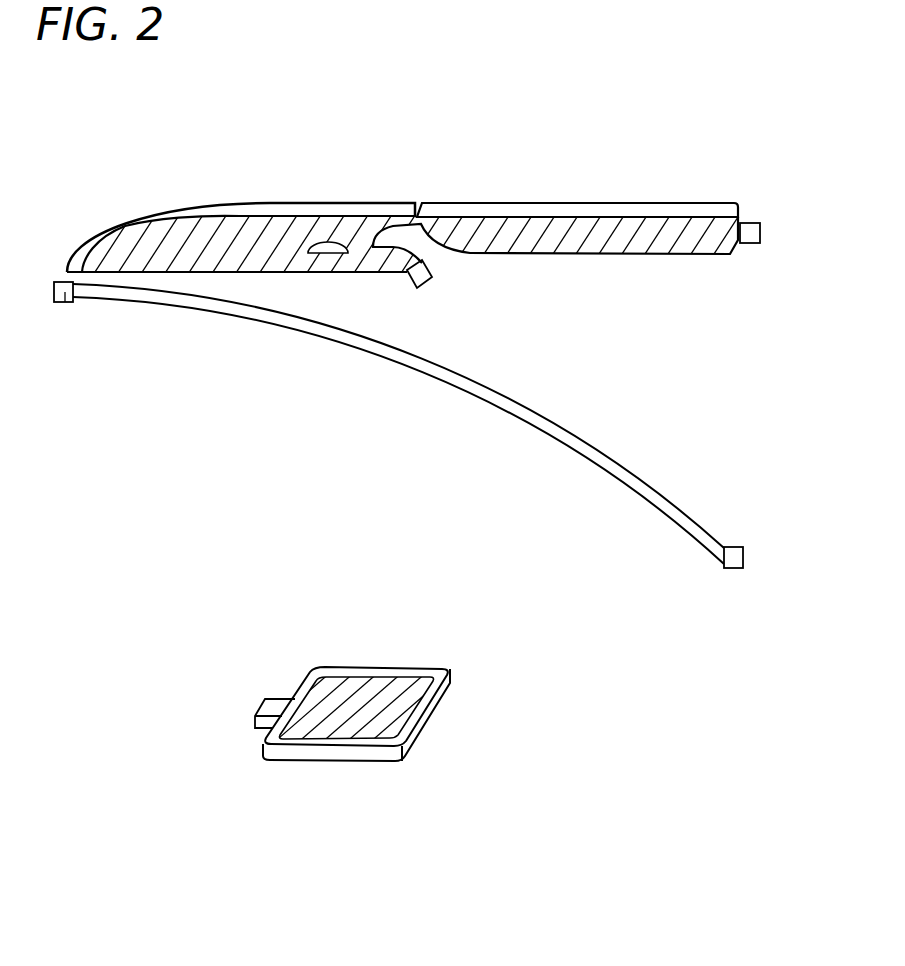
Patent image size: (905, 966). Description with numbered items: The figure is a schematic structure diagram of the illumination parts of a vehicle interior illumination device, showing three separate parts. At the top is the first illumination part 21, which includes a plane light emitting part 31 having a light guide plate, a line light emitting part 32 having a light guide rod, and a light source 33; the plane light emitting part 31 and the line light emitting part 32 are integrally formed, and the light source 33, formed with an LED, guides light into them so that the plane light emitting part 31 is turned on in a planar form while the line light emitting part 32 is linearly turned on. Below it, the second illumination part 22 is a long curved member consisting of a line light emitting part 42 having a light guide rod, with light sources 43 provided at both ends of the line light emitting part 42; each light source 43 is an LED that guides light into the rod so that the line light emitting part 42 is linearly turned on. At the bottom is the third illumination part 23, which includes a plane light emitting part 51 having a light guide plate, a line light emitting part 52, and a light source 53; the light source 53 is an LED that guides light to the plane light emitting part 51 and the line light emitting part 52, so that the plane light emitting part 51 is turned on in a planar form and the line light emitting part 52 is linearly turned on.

The first illumination part 21 is at (408, 232).
The second illumination part 22 is at (385, 460).
The third illumination part 23 is at (338, 699).
The plane light emitting part 31 is at (533, 245).
The line light emitting part 32 is at (482, 202).
The light source 33 is at (750, 223).
The line light emitting part 42 is at (373, 350).
The light sources 43 is at (58, 302).
The plane light emitting part 51 is at (335, 733).
The line light emitting part 52 is at (385, 745).
The light source 53 is at (273, 708).